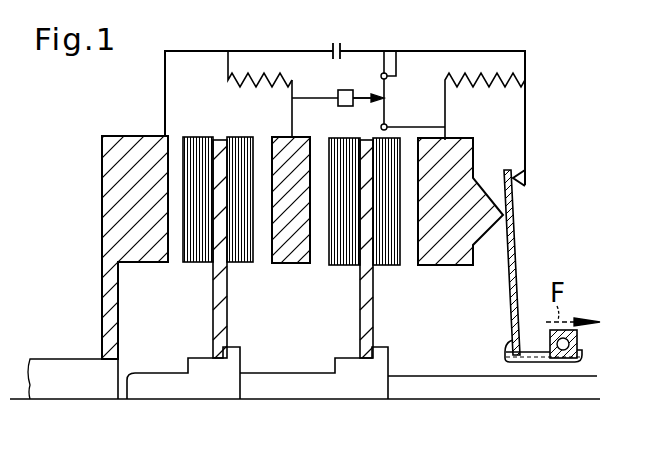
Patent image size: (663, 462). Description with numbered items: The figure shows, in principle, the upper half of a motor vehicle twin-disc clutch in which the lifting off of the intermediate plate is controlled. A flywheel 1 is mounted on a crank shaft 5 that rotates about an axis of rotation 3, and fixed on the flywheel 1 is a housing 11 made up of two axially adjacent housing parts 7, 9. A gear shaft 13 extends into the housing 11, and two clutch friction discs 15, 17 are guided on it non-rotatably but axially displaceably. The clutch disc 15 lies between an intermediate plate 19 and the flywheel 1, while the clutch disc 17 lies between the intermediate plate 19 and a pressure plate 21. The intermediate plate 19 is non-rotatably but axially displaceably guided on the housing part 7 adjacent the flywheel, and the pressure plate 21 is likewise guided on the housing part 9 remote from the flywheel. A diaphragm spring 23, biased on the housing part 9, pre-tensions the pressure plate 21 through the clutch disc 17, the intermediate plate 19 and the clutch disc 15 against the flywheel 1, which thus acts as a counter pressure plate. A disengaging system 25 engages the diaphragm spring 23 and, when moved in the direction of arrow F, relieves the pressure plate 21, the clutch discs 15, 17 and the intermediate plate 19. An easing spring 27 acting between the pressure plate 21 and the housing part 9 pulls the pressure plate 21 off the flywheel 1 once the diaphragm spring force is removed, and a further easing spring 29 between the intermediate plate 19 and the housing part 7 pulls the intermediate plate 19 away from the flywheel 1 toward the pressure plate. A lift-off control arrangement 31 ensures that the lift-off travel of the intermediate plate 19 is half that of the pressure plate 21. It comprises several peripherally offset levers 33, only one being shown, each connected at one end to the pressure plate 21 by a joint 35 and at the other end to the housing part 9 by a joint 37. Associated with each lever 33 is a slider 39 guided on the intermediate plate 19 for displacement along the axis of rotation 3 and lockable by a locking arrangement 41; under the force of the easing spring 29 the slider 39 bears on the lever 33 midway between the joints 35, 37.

The flywheel 1 is at (104, 188).
The axis of rotation 3 is at (487, 400).
The crank shaft 5 is at (79, 370).
The housing part 7 is at (318, 52).
The housing part 9 is at (485, 51).
The housing 11 is at (563, 74).
The gear shaft 13 is at (320, 388).
The clutch friction disc 15 is at (214, 301).
The clutch friction disc 17 is at (361, 301).
The intermediate plate 19 is at (283, 137).
The pressure plate 21 is at (504, 213).
The diaphragm spring 23 is at (514, 249).
The disengaging system 25 is at (592, 343).
The easing spring 27 is at (494, 82).
The easing spring 29 is at (252, 78).
The lift-off control arrangement 31 is at (363, 68).
The lever 33 is at (385, 103).
The joint 35 is at (388, 124).
The joint 37 is at (385, 72).
The slider 39 is at (364, 101).
The locking arrangement 41 is at (338, 94).